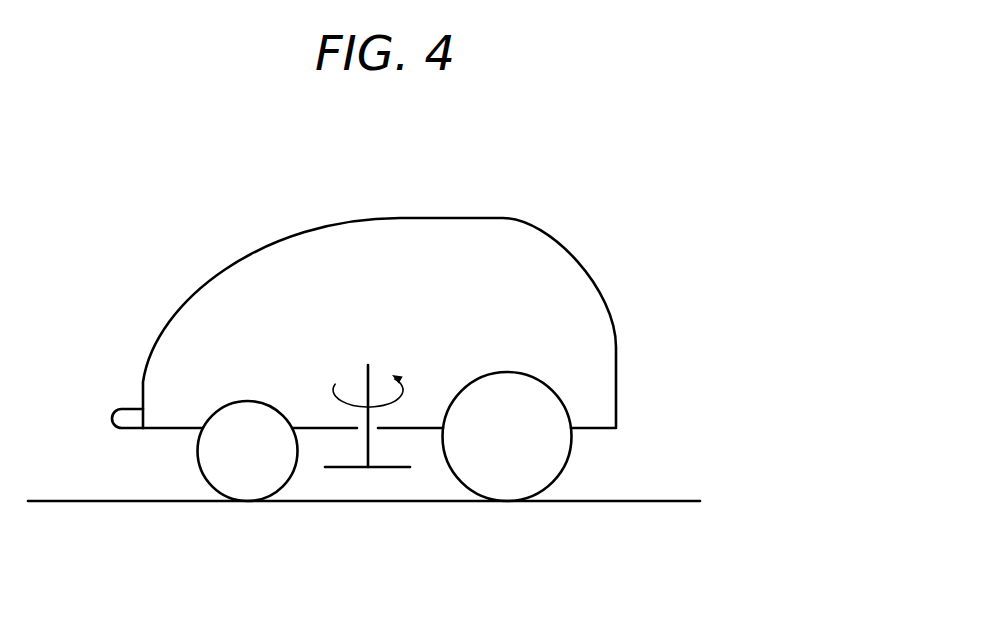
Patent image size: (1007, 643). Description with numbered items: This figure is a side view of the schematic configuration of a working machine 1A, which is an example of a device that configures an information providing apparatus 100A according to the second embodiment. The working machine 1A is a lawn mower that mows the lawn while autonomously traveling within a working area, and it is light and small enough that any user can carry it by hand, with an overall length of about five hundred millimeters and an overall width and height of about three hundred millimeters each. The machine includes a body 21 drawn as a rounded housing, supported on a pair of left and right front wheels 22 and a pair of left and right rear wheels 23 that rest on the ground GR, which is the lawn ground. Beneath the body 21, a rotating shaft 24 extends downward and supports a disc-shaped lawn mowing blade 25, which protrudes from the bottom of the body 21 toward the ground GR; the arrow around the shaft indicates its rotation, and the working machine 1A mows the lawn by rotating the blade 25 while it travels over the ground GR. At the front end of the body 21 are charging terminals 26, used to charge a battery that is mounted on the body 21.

The information providing apparatus 100A is at (413, 358).
The working machine 1A is at (379, 295).
The body 21 is at (505, 218).
The front wheels 22 is at (251, 486).
The rear wheels 23 is at (510, 486).
The rotating shaft 24 is at (365, 421).
The lawn mowing blade 25 is at (352, 469).
The charging terminals 26 is at (130, 410).
The ground GR is at (670, 500).